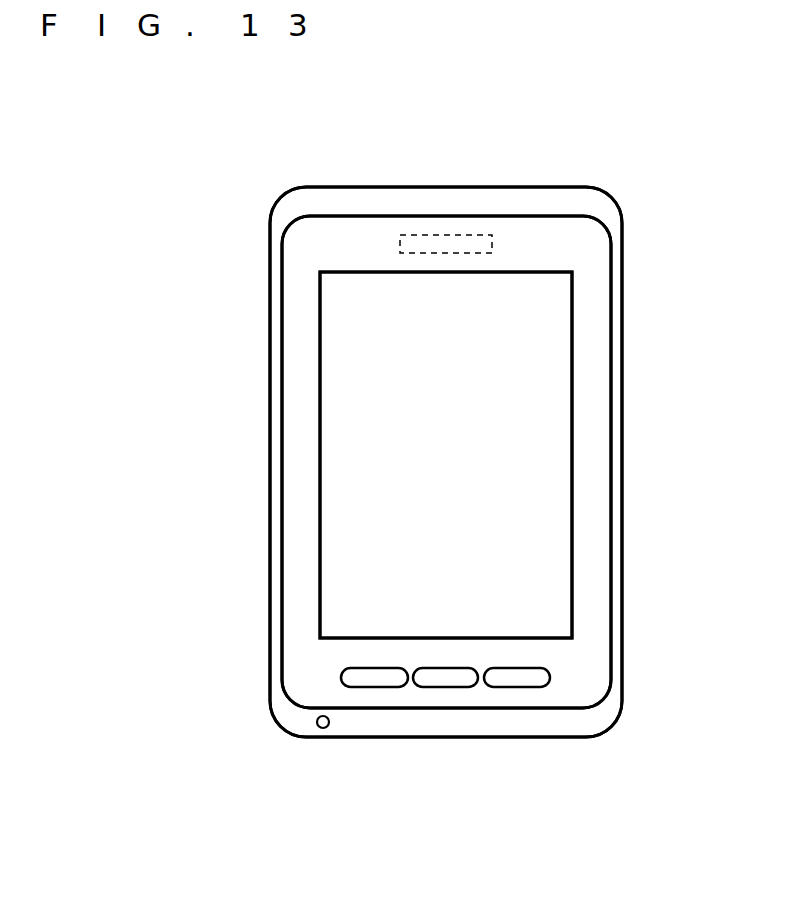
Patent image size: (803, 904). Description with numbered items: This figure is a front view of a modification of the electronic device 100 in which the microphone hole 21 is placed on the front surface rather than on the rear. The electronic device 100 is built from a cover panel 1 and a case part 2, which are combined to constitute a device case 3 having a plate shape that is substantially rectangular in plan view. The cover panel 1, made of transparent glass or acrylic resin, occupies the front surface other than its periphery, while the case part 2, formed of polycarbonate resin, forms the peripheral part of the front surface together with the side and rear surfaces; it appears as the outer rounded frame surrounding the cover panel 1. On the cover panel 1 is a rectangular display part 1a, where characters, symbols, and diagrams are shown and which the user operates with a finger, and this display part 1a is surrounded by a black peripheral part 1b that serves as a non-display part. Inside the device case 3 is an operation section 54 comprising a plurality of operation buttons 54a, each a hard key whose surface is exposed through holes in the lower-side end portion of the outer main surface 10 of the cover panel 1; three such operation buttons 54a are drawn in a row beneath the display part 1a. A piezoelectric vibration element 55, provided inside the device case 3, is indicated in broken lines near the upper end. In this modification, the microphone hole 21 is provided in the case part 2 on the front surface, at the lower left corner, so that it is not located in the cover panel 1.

The electronic device 100 is at (497, 138).
The cover panel 1 is at (593, 330).
The display part 1a is at (550, 555).
The peripheral part 1b is at (593, 607).
The case part 2 is at (600, 720).
The device case 3 is at (622, 262).
The outer main surface 10 is at (593, 427).
The microphone hole 21 is at (318, 727).
The operation section 54 is at (445, 756).
The operation button 54a is at (374, 731).
The piezoelectric vibration element 55 is at (433, 233).